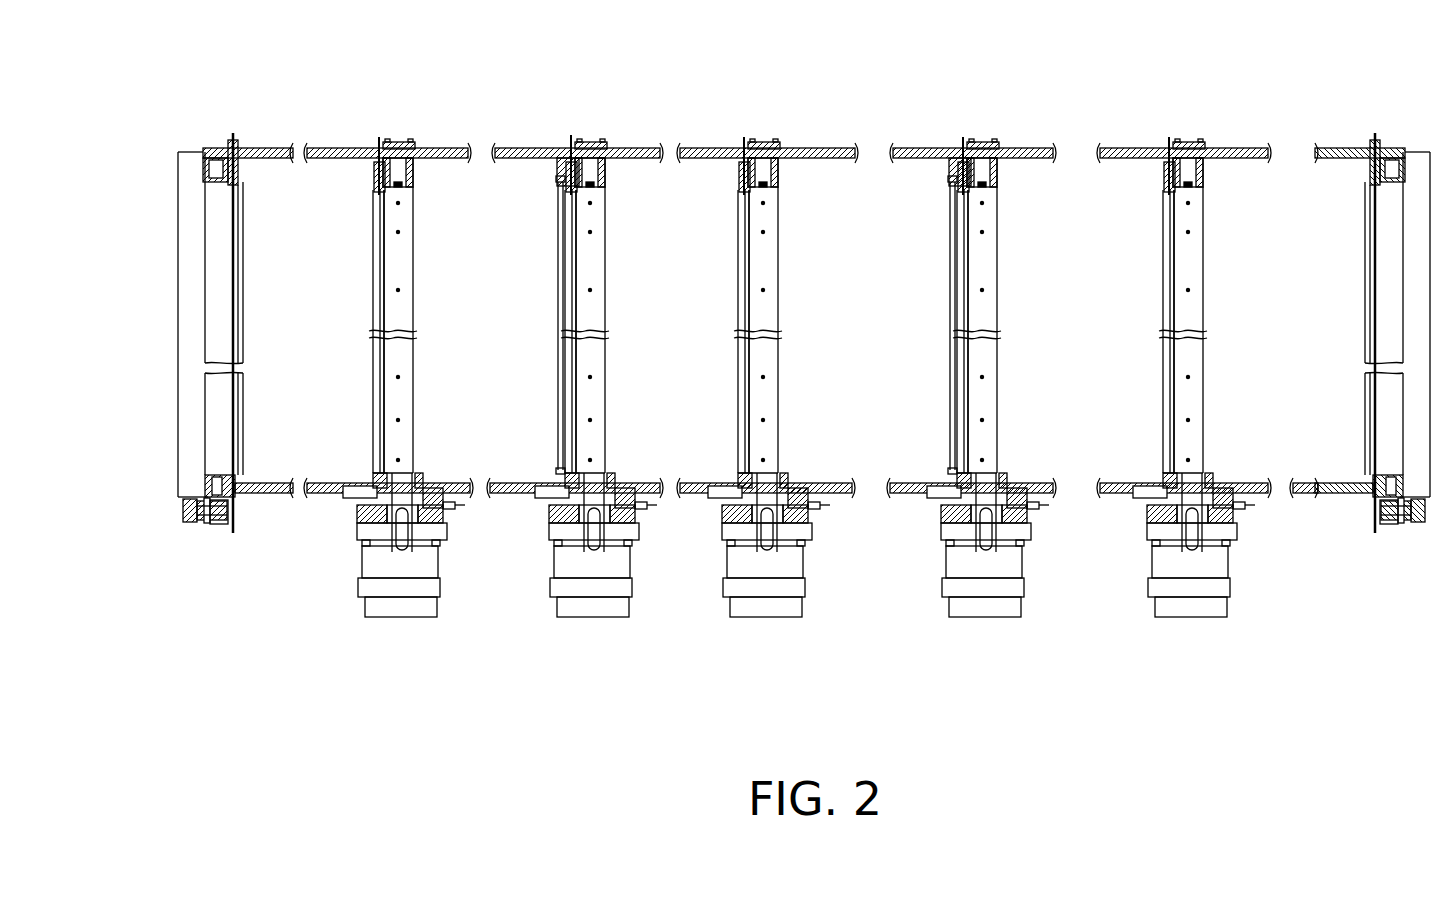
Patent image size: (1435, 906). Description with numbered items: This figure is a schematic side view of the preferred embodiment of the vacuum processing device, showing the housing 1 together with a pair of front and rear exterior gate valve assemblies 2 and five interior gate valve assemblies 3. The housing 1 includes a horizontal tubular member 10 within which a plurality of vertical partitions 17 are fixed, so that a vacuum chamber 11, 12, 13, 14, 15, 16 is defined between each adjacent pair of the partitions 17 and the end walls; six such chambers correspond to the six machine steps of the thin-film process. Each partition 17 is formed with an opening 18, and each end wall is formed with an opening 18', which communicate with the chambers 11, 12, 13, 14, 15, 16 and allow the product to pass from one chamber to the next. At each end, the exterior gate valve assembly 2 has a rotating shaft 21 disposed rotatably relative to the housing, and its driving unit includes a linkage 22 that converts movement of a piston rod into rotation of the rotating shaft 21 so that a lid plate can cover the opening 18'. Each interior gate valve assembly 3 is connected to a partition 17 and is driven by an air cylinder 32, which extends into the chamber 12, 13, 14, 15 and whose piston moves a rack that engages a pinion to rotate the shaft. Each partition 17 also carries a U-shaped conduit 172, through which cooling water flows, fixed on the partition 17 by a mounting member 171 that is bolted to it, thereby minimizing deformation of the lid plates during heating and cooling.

The housing 1 is at (686, 116).
The exterior gate valve assembly 2 is at (203, 535).
The interior gate valve assembly 3 is at (412, 218).
The horizontal tubular member 10 is at (1120, 148).
The vacuum chamber 11 is at (278, 460).
The vacuum chamber 12 is at (502, 444).
The vacuum chamber 13 is at (678, 450).
The vacuum chamber 14 is at (897, 450).
The vacuum chamber 15 is at (1100, 450).
The vacuum chamber 16 is at (1316, 443).
The vertical partition 17 is at (378, 205).
The mounting member 171 is at (565, 175).
The U-shaped conduit 172 is at (558, 210).
The opening 18 is at (806, 386).
The opening 18' is at (789, 307).
The rotating shaft 21 is at (212, 215).
The linkage 22 is at (180, 505).
The air cylinder 32 is at (388, 605).